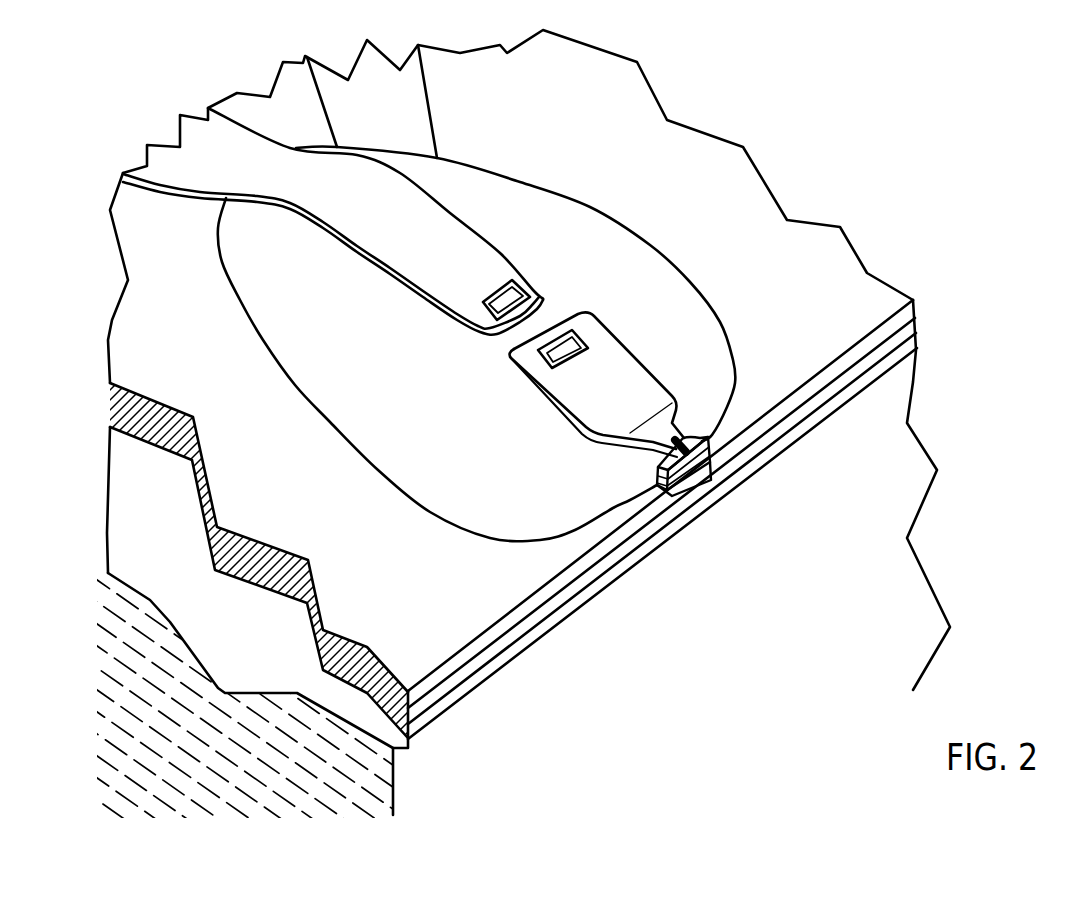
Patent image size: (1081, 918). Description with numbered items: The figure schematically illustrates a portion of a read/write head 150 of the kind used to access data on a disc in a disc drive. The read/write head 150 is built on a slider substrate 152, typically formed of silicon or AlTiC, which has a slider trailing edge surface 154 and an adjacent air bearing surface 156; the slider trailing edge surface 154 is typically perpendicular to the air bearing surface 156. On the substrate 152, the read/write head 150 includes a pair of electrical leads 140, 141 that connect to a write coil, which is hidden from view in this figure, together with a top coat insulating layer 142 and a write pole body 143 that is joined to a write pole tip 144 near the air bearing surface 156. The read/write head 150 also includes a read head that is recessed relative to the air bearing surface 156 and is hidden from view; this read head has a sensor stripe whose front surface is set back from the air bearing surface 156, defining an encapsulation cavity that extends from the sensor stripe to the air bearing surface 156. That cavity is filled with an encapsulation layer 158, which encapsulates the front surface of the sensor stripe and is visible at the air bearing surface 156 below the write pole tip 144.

The electrical lead 140 is at (235, 158).
The electrical lead 141 is at (392, 110).
The top coat insulating layer 142 is at (523, 225).
The write pole body 143 is at (633, 352).
The write pole tip 144 is at (685, 438).
The read/write head 150 is at (978, 158).
The slider substrate 152 is at (907, 423).
The slider trailing edge surface 154 is at (255, 647).
The air bearing surface 156 is at (682, 714).
The encapsulation layer 158 is at (683, 505).